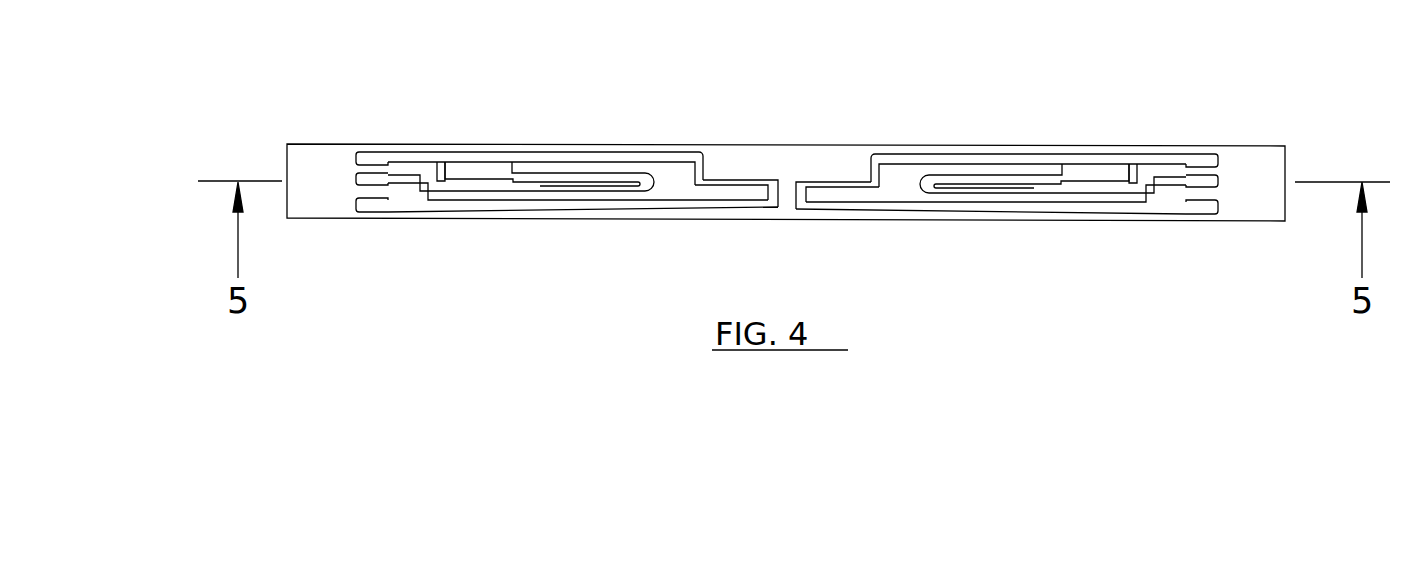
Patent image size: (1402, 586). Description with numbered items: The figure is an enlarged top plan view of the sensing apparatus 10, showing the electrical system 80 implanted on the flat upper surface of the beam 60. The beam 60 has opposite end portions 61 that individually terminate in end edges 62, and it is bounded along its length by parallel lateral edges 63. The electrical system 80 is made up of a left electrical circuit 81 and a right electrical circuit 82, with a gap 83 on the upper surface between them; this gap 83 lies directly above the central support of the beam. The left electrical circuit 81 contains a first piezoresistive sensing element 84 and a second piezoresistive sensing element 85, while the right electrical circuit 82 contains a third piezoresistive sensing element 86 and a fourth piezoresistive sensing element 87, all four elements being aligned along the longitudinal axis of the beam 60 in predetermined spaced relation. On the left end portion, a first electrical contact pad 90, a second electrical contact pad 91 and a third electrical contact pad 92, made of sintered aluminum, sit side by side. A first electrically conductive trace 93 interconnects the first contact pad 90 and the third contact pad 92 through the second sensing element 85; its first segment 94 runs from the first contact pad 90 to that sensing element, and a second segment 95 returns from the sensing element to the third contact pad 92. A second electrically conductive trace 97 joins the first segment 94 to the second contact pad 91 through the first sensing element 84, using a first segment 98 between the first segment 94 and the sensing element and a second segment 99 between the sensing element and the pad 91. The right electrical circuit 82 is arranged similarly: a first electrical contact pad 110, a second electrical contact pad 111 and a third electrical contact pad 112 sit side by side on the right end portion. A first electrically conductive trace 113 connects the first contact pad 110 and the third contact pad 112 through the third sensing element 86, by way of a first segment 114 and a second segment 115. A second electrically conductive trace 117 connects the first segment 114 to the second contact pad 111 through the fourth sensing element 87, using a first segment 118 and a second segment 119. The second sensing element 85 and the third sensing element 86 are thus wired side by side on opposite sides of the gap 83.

The sensing apparatus 10 is at (753, 130).
The beam 60 is at (756, 220).
The opposite end portions 61 is at (318, 158).
The end edges 62 is at (284, 198).
The lateral edges 63 is at (580, 150).
The electrical system 80 is at (662, 128).
The left electrical circuit 81 is at (517, 174).
The right electrical circuit 82 is at (1090, 167).
The gap 83 is at (785, 210).
The first piezoresistive sensing element 84 is at (467, 183).
The second piezoresistive sensing element 85 is at (757, 175).
The third piezoresistive sensing element 86 is at (822, 178).
The fourth piezoresistive sensing element 87 is at (1096, 190).
The first electrical contact pad 90 is at (370, 160).
The second electrical contact pad 91 is at (362, 182).
The third electrical contact pad 92 is at (372, 213).
The first electrically conductive trace 93 is at (687, 148).
The first segment 94 is at (515, 153).
The lower conductor trace 95 is at (501, 215).
The second electrically conductive trace 97 is at (590, 168).
The first segment 98 is at (438, 170).
The second segment 99 is at (656, 185).
The first electrical contact pad 110 is at (1205, 160).
The second electrical contact pad 111 is at (1212, 188).
The third electrical contact pad 112 is at (1205, 215).
The first electrically conductive trace 113 is at (1030, 152).
The first segment 114 is at (1100, 155).
The second segment 115 is at (806, 186).
The second electrically conductive trace 117 is at (917, 192).
The first segment 118 is at (1133, 172).
The second segment 119 is at (890, 168).